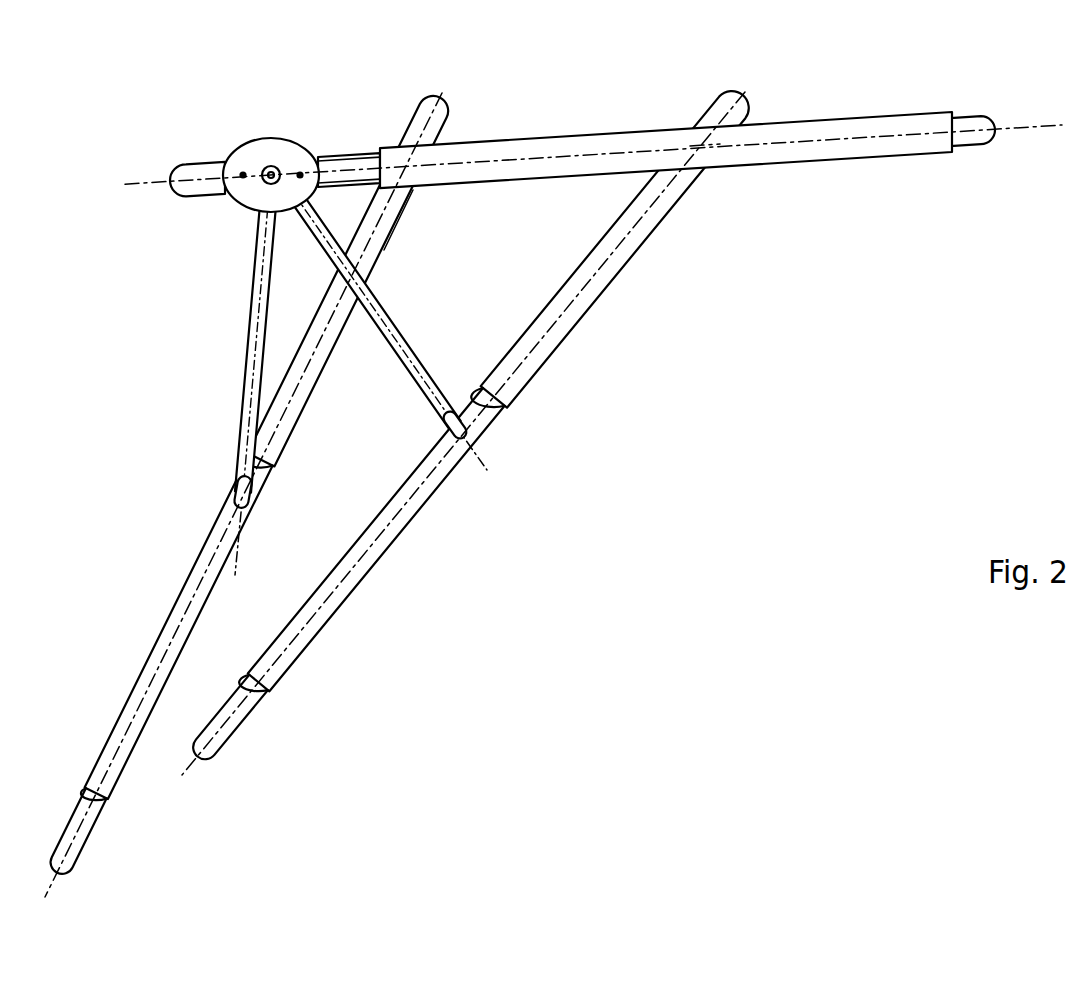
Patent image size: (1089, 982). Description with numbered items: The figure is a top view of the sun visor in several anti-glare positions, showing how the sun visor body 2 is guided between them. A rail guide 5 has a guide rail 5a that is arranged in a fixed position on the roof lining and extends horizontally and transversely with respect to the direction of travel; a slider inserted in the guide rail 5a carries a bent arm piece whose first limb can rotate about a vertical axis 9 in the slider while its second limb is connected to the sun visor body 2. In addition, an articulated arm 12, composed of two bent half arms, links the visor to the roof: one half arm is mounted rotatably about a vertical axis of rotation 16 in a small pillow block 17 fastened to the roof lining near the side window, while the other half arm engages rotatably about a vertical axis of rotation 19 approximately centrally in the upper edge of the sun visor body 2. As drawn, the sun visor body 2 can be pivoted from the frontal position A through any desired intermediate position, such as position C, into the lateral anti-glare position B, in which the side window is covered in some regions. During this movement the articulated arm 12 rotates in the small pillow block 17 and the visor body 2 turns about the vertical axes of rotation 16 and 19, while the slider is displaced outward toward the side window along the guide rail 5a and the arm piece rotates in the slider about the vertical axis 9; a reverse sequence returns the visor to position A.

The sun visor body 2 is at (977, 122).
The rail guide 5 is at (863, 207).
The guide rail 5a is at (887, 127).
The vertical axis 9 is at (705, 145).
The articulated arm 12 is at (247, 360).
The vertical axis of rotation 16 is at (266, 162).
The small pillow block 17 is at (290, 157).
The vertical axis of rotation 19 is at (490, 443).
The frontal anti-glare position A is at (597, 430).
The lateral anti-glare position B is at (137, 698).
The intermediate position C is at (430, 480).